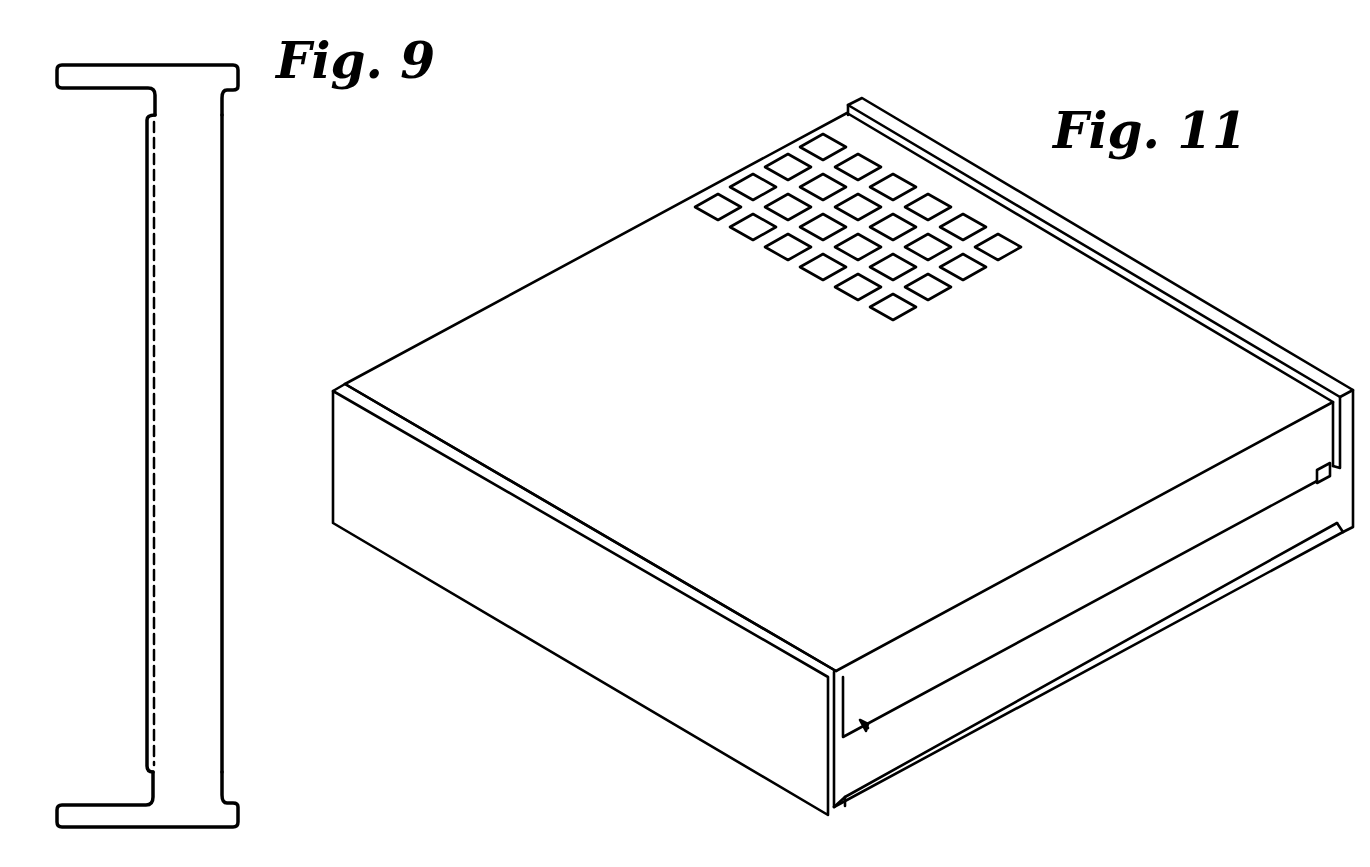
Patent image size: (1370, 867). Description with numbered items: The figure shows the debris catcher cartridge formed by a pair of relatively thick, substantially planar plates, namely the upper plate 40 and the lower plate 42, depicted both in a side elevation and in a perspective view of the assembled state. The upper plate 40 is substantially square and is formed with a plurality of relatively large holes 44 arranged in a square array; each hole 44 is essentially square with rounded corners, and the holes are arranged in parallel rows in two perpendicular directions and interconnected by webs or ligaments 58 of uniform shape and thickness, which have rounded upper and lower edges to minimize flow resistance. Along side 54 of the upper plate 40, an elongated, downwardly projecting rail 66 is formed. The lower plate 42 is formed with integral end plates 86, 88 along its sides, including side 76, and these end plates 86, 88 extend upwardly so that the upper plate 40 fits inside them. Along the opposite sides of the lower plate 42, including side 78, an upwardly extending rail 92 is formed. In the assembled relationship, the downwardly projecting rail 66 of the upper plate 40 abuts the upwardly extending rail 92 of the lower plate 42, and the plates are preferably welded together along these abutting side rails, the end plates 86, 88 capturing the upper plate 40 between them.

In FIG. 11, the upper plate 40 is at (553, 250).
In FIG. 11, the lower plate 42 is at (957, 744).
In FIG. 11, the holes 44 is at (962, 272).
In FIG. 11, the side 54 is at (1072, 570).
In FIG. 11, the webs or ligaments 58 is at (865, 278).
In FIG. 11, the rail 66 is at (866, 722).
In FIG. 11, the side 76 is at (652, 700).
In FIG. 9, the side 78 is at (207, 299).
In FIG. 11, the side 78 is at (1090, 643).
In FIG. 9, the end plate 86 is at (108, 75).
In FIG. 11, the end plate 86 is at (1120, 262).
In FIG. 9, the end plate 88 is at (103, 805).
In FIG. 11, the end plate 88 is at (673, 585).
In FIG. 9, the rail 92 is at (145, 655).
In FIG. 11, the rail 92 is at (866, 728).